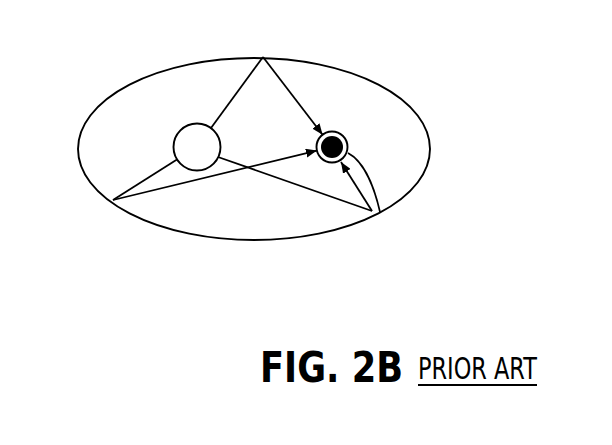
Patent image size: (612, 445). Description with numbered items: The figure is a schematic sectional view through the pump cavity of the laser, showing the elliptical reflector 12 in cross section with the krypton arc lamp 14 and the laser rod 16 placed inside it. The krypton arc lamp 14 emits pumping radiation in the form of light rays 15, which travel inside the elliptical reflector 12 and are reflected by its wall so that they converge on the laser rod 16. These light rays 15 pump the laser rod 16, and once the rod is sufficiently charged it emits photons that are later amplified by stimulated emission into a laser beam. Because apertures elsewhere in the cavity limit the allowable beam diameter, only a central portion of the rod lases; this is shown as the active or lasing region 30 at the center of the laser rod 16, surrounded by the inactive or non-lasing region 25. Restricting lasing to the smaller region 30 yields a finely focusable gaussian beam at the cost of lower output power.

The elliptical reflector 12 is at (374, 80).
The krypton arc lamp 14 is at (174, 136).
The light rays 15 is at (237, 88).
The laser rod 16 is at (348, 143).
The inactive or non-lasing region 25 is at (380, 212).
The active or lasing region 30 is at (328, 163).